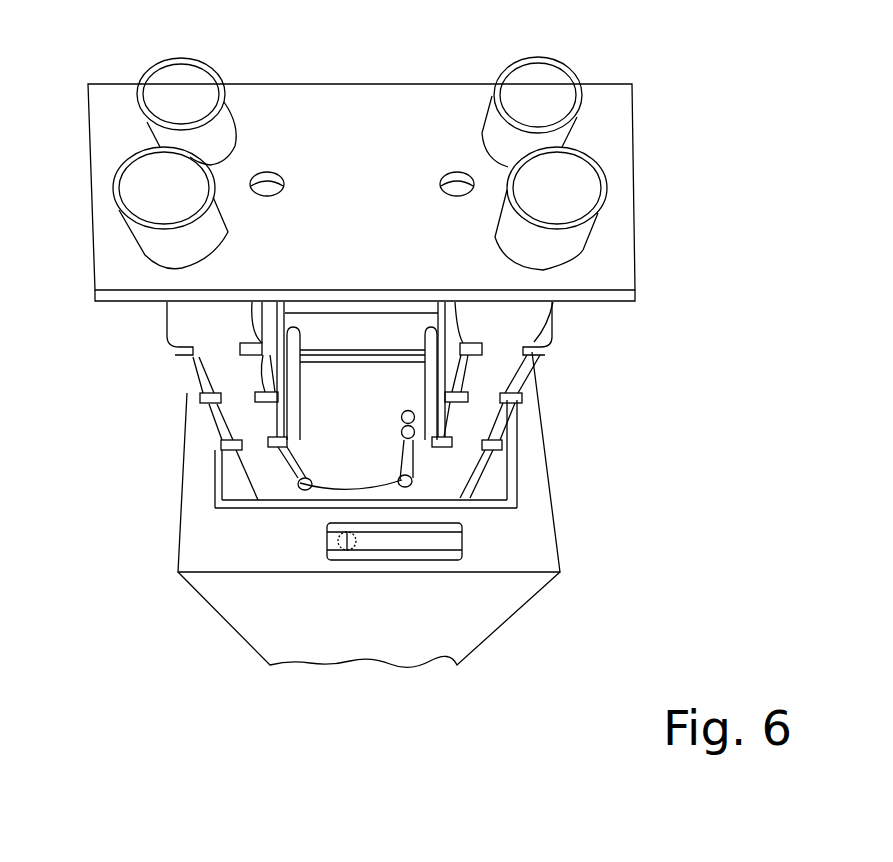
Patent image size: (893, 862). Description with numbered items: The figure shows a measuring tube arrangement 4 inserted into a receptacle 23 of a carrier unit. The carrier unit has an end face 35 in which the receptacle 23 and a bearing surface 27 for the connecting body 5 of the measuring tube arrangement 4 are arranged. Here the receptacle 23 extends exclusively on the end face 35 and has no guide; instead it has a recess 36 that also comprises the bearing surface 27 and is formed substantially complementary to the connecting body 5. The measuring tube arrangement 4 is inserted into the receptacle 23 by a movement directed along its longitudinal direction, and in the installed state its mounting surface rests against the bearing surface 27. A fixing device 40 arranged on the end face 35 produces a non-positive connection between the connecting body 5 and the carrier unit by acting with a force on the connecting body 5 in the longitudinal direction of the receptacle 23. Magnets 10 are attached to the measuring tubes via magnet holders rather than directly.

The measuring tube arrangement 4 is at (620, 154).
The connecting body 5 is at (588, 262).
The magnet 10 is at (440, 425).
The receptacle 23 is at (320, 470).
The bearing surface 27 is at (513, 480).
The recess 36 is at (517, 505).
The end face 35 is at (218, 526).
The fixing device 40 is at (410, 545).